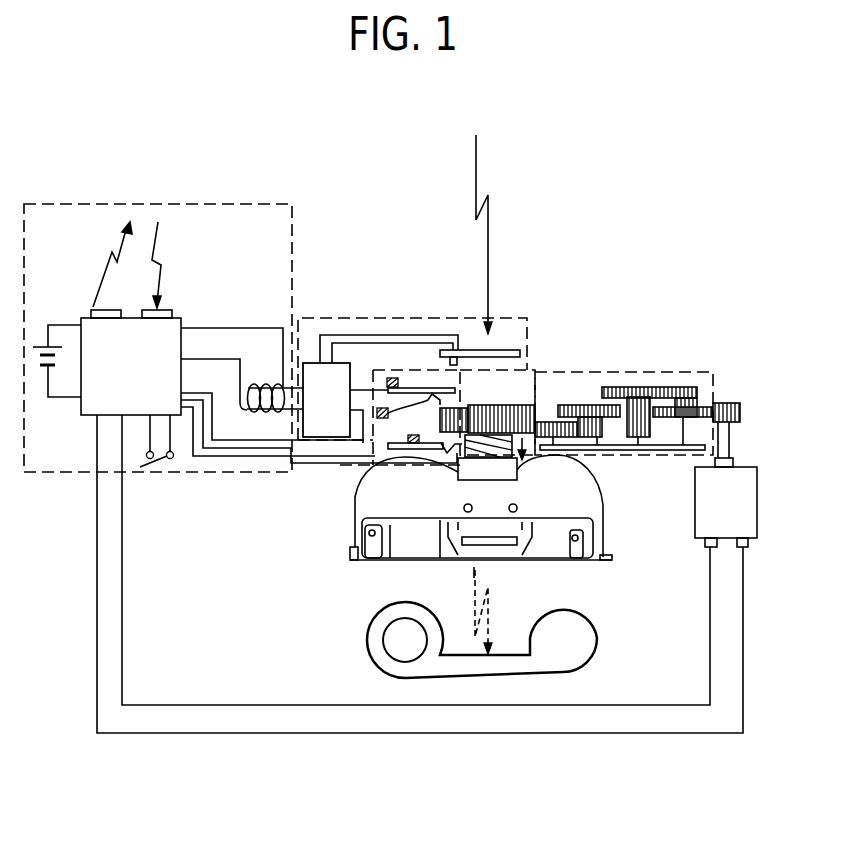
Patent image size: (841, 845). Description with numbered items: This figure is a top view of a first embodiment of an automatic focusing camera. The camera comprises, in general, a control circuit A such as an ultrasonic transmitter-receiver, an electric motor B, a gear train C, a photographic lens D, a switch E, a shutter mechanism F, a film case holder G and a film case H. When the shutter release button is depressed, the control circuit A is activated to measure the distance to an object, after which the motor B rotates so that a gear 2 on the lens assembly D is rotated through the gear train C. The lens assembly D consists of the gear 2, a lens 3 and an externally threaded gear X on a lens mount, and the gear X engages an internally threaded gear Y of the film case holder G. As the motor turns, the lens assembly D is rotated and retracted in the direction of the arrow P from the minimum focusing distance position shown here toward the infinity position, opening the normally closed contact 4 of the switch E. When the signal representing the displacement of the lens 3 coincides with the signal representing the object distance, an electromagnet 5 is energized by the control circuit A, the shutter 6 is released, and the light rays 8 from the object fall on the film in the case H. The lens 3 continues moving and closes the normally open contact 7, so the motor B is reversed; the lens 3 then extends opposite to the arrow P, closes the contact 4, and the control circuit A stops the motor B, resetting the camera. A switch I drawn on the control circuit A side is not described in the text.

The control circuit A is at (255, 204).
The power switch I is at (152, 470).
The electromagnet 5 is at (262, 382).
The shutter mechanism F is at (460, 318).
The shutter 6 is at (503, 350).
The light rays 8 is at (490, 262).
The normally closed contact 4 is at (393, 388).
The normally open contact 7 is at (421, 420).
The switch E is at (375, 455).
The lens 3 is at (492, 404).
The photographic lens D is at (523, 380).
The externally threaded gear X is at (463, 464).
The arrow P is at (524, 446).
The internally threaded gear Y is at (492, 470).
The gear 2 is at (556, 406).
The gear train C is at (710, 387).
The electric motor B is at (708, 490).
The film case holder G is at (590, 502).
The film case H is at (583, 645).